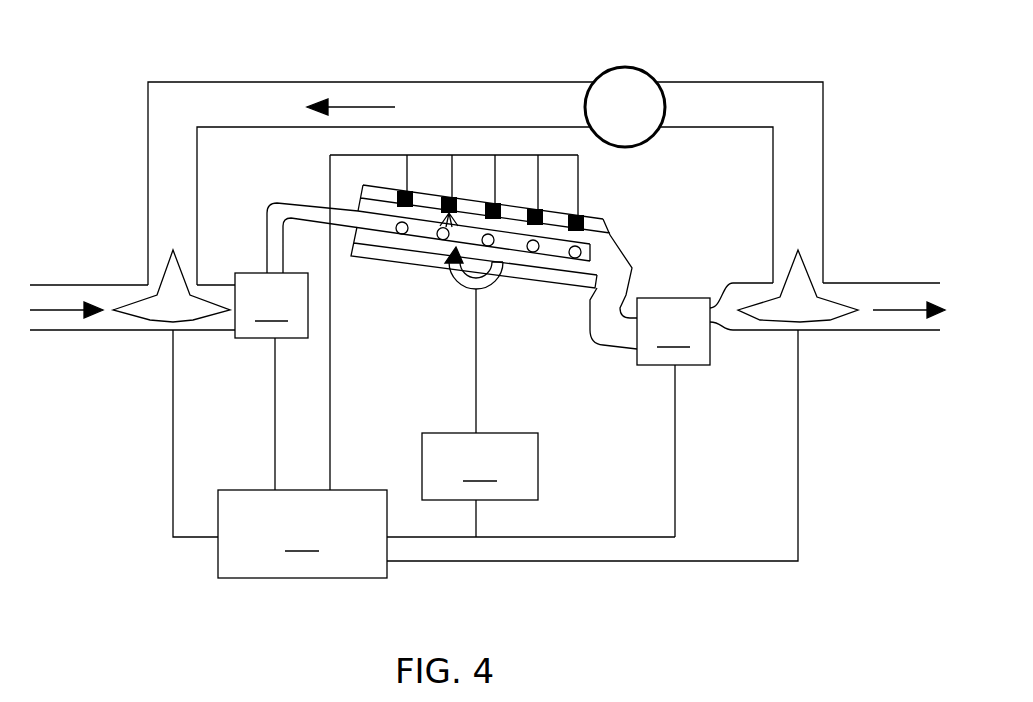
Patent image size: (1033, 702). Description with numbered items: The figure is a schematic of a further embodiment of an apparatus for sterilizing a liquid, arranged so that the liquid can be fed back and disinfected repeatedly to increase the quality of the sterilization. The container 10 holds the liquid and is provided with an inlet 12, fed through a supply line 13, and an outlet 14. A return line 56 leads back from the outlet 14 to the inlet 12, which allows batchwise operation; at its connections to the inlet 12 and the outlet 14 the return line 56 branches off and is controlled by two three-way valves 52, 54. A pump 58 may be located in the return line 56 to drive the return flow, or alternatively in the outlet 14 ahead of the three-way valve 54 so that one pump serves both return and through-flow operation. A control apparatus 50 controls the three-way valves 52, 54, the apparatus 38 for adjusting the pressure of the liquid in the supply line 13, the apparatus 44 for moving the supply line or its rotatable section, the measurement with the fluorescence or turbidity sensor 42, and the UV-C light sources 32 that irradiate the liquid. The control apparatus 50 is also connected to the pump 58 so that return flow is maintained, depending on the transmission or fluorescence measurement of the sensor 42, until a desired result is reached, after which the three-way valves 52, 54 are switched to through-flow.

The container 10 is at (410, 263).
The inlet 12 is at (82, 287).
The supply line 13 is at (400, 243).
The outlet 14 is at (910, 305).
The UV-C light sources 32 is at (453, 198).
The apparatus for adjusting the pressure of the liquid in the supply line 38 is at (271, 381).
The fluorescence or turbidity sensor 42 is at (673, 417).
The apparatus for moving the supply line or the rotatable section thereof 44 is at (480, 485).
The control apparatus 50 is at (446, 534).
The 3-way valve 52 is at (163, 312).
The 3-way valve 54 is at (805, 315).
The return line 56 is at (453, 97).
The pump 58 is at (653, 78).